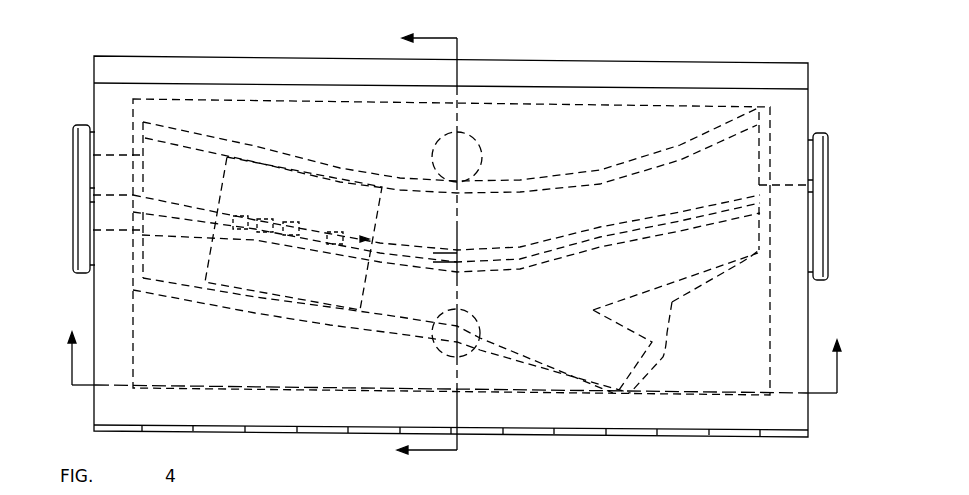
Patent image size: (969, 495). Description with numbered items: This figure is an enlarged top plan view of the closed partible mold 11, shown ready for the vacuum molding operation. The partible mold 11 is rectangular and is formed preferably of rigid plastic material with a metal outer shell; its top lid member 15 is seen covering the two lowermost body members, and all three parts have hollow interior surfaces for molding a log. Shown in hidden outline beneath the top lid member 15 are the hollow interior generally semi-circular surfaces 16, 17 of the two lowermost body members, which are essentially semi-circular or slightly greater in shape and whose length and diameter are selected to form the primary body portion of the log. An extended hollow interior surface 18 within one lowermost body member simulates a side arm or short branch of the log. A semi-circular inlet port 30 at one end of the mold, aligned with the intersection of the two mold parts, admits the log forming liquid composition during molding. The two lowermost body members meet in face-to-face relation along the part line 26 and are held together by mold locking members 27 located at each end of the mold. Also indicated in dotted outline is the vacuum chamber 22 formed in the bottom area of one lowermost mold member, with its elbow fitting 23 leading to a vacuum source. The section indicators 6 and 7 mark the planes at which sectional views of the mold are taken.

The partible mold 11 is at (782, 54).
The top lid member 15 is at (660, 415).
The hollow interior generally semi-circular surface 16 is at (365, 312).
The hollow interior generally semi-circular surface 17 is at (510, 208).
The extended hollow interior surface 18 is at (672, 330).
The vacuum chamber 22 is at (443, 140).
The elbow fitting 23 is at (473, 316).
The part line 26 is at (623, 230).
The mold locking members 27 is at (73, 191).
The semi-circular inlet port 30 is at (107, 155).
The section line 6- 6 is at (453, 367).
The section line 7- 7 is at (439, 246).